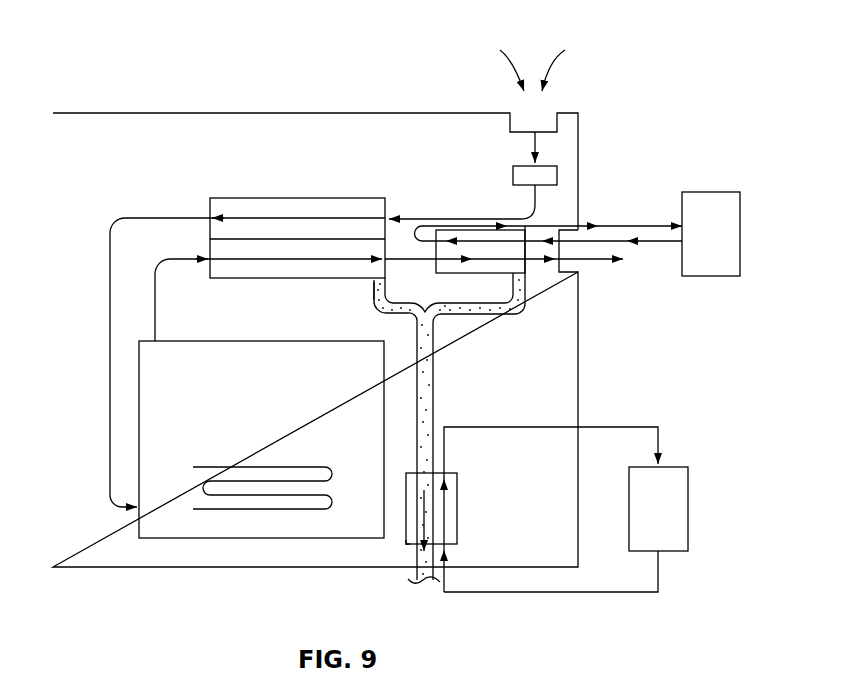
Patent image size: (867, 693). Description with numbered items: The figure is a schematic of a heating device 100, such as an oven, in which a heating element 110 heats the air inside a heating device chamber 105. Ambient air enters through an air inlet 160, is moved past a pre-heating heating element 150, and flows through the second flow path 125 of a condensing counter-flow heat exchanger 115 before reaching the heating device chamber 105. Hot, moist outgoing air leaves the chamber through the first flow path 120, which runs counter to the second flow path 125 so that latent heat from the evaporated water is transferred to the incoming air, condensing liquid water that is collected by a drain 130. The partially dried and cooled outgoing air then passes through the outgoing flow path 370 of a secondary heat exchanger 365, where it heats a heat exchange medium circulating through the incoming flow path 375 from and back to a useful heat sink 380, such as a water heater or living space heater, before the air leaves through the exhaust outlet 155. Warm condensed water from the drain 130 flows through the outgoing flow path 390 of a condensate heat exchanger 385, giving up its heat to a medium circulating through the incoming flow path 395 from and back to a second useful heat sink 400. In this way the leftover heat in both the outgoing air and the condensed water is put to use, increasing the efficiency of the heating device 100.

The heating device 100 is at (119, 96).
The heating device chamber 105 is at (164, 513).
The heating element 110 is at (262, 466).
The condensing counter-flow heat exchanger 115 is at (208, 205).
The first flow path 120 is at (291, 280).
The second flow path 125 is at (300, 197).
The drain 130 is at (434, 392).
The pre-heating heating element 150 is at (513, 175).
The exhaust outlet 155 is at (574, 270).
The air inlet 160 is at (517, 122).
The secondary heat exchanger 365 is at (437, 250).
The outgoing flow path 370 is at (474, 273).
The incoming flow path 375 is at (527, 240).
The useful heat sink 380 is at (712, 192).
The condensate heat exchanger 385 is at (432, 483).
The outgoing flow path 390 is at (403, 542).
The incoming flow path 395 is at (458, 510).
The useful heat sink 400 is at (688, 507).